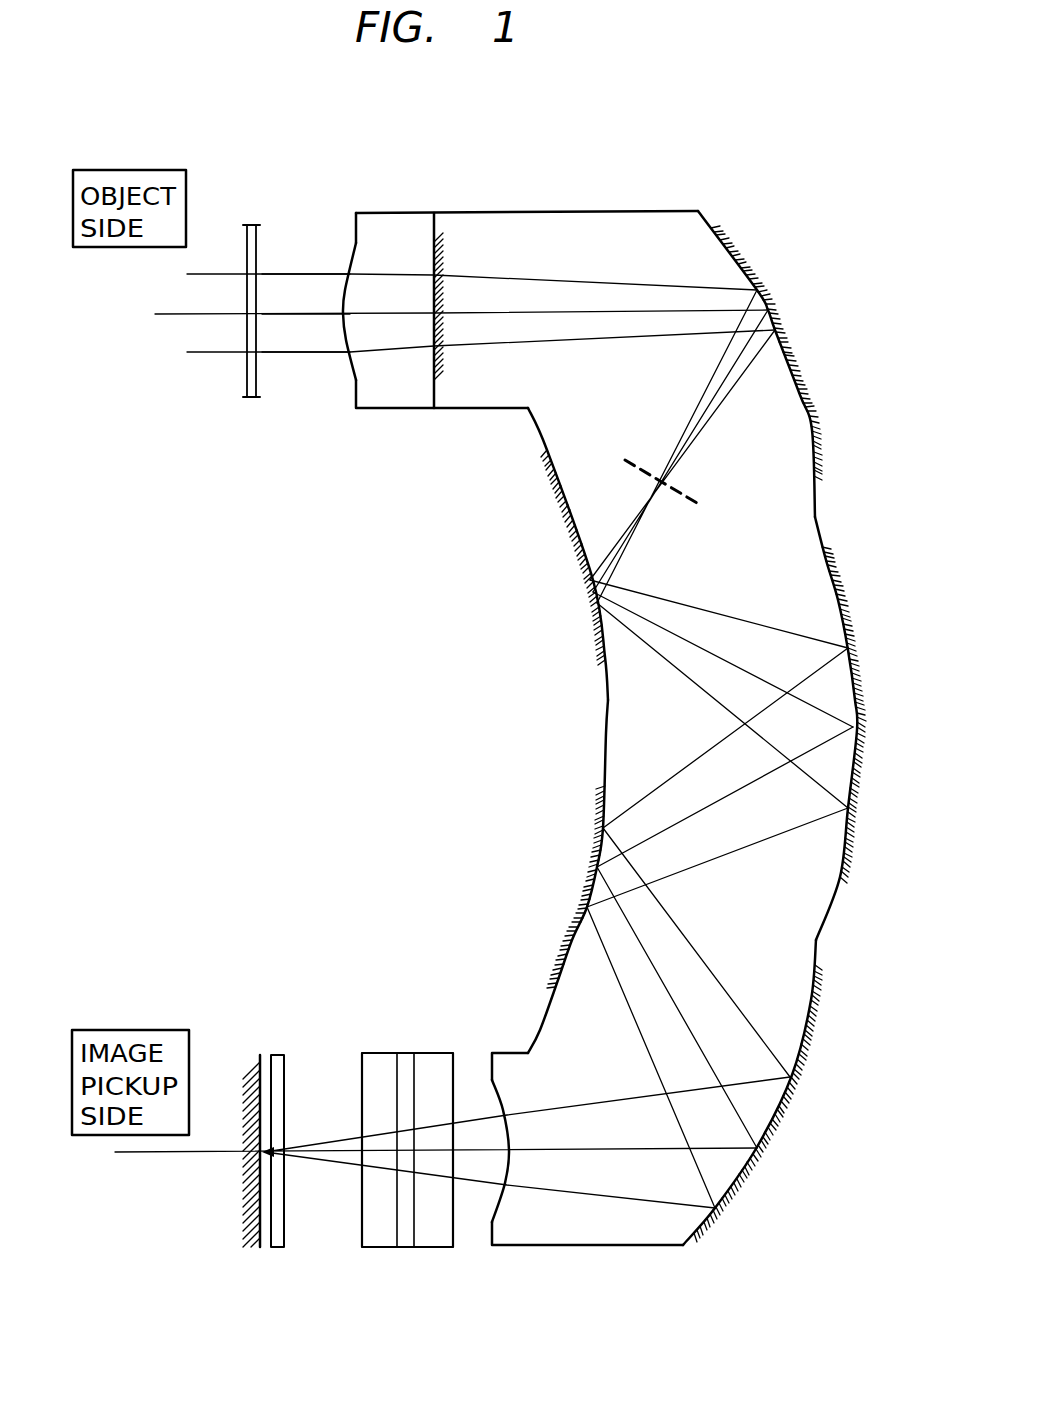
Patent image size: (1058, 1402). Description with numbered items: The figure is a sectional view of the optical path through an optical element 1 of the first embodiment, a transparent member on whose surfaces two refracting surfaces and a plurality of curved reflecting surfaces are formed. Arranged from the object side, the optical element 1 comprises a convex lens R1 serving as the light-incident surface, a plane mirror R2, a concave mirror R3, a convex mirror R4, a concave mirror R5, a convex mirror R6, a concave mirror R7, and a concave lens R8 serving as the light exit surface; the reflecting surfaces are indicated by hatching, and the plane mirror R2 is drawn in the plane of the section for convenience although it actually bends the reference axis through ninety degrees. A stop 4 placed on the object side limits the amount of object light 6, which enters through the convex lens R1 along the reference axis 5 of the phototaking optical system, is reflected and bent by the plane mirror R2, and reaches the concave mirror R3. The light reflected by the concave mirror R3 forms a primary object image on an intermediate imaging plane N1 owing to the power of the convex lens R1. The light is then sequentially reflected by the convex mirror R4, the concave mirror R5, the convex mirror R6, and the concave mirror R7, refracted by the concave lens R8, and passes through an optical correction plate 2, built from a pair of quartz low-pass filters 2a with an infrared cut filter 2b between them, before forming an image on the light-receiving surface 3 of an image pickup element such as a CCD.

The optical element 1 is at (634, 716).
The optical correction plate 2 is at (403, 1154).
The quartz low-pass filters 2a is at (372, 1053).
The infrared cut filter 2b is at (400, 1053).
The light-receiving surface 3 is at (249, 1243).
The stop 4 is at (250, 226).
The reference axis 5 is at (446, 302).
The object light 6 is at (218, 346).
The convex lens R1 is at (351, 246).
The plane mirror R2 is at (440, 262).
The concave mirror R3 is at (803, 400).
The convex mirror R4 is at (578, 527).
The concave mirror R5 is at (850, 615).
The convex mirror R6 is at (578, 945).
The concave mirror R7 is at (772, 1108).
The concave lens R8 is at (490, 1195).
The intermediate imaging plane N1 is at (676, 481).